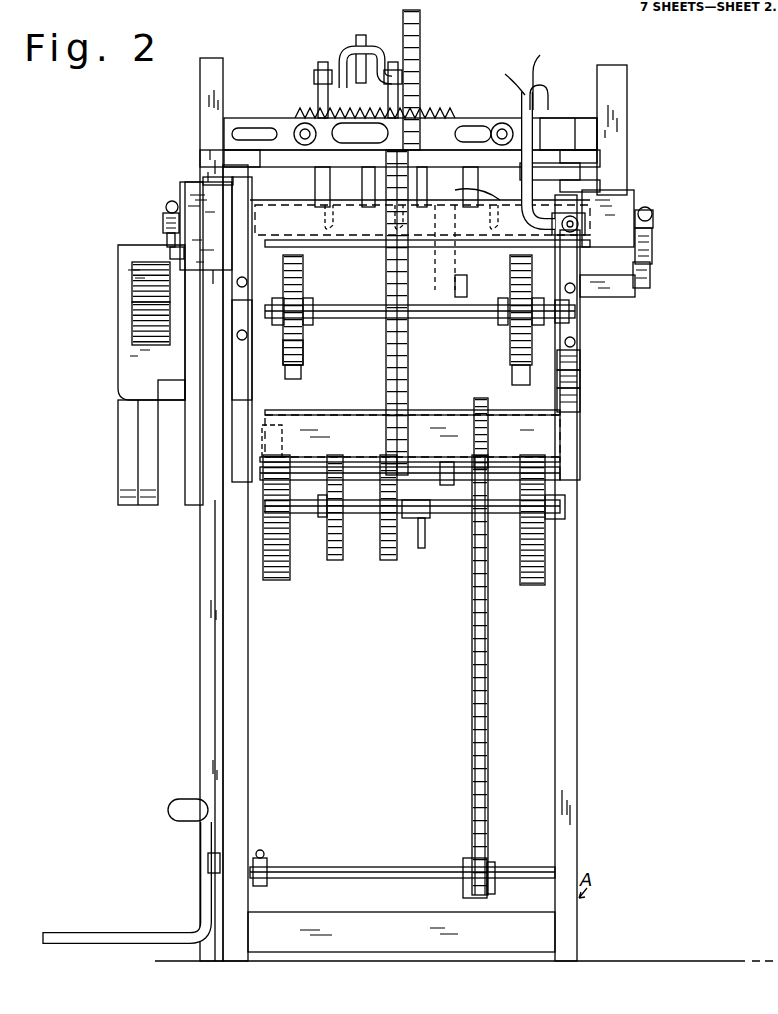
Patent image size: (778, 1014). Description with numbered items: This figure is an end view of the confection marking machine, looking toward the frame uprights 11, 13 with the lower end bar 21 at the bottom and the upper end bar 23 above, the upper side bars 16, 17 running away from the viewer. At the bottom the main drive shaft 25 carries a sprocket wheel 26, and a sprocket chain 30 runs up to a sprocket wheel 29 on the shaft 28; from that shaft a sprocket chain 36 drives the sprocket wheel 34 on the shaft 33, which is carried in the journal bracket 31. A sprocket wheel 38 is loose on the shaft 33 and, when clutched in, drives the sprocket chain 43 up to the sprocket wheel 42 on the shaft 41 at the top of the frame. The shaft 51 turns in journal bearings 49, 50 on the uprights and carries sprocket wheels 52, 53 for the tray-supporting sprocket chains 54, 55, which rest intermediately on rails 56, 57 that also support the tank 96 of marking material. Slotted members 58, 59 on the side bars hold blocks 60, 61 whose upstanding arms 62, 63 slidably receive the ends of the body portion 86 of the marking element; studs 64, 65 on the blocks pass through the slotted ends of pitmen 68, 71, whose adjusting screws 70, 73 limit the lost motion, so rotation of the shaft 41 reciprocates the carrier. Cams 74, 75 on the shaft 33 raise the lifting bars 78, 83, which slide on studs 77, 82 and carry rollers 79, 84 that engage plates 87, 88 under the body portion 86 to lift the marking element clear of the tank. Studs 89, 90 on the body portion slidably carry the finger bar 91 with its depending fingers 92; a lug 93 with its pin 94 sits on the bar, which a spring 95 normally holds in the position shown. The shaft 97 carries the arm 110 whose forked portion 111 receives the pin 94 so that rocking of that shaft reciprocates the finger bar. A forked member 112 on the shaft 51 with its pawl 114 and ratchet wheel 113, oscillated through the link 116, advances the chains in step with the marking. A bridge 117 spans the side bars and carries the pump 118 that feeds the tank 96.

The upright 11 is at (248, 706).
The upright 13 is at (577, 707).
The upper side bar 16 is at (232, 242).
The upper side bar 17 is at (652, 212).
The lower end bar 21 is at (372, 955).
The upper end bar 23 is at (552, 437).
The shaft 25 is at (365, 868).
The sprocket wheel 26 is at (468, 856).
The shaft 28 is at (442, 466).
The sprocket wheel 29 is at (488, 405).
The sprocket chain 30 is at (472, 684).
The journal bracket 31 is at (418, 530).
The shaft 33 is at (565, 508).
The sprocket wheel 34 is at (327, 550).
The sprocket chain 36 is at (327, 535).
The sprocket wheel 38 is at (385, 562).
The shaft 41 is at (595, 186).
The sprocket wheel 42 is at (395, 244).
The sprocket chain 43 is at (386, 372).
The journal bearing 49 is at (238, 338).
The journal bearing 50 is at (582, 356).
The shaft 51 is at (456, 318).
The sprocket wheel 52 is at (296, 368).
The sprocket wheel 53 is at (580, 379).
The sprocket chain 54 is at (303, 350).
The sprocket chain 55 is at (510, 345).
The rail 56 is at (262, 262).
The rail 57 is at (575, 303).
The slotted member 58 is at (206, 226).
The slotted member 59 is at (640, 280).
The block 60 is at (220, 182).
The block 61 is at (635, 200).
The arms 62 is at (198, 100).
The arms 63 is at (620, 133).
The stud 64 is at (163, 222).
The stud 65 is at (655, 236).
The pitman 68 is at (170, 253).
The adjusting screw 70 is at (166, 204).
The pitman 71 is at (650, 285).
The adjusting screw 73 is at (655, 218).
The cam 74 is at (288, 577).
The cam 75 is at (525, 588).
The stud 77 is at (290, 380).
The lifting bar 78 is at (262, 432).
The roller 79 is at (247, 167).
The stud 82 is at (528, 372).
The lifting bar 83 is at (580, 400).
The roller 84 is at (585, 170).
The body portion 86 is at (575, 130).
The plate 87 is at (258, 120).
The plate 88 is at (612, 150).
The stud 89 is at (303, 120).
The stud 90 is at (498, 122).
The finger bar 91 is at (432, 130).
The fingers 92 is at (362, 180).
The lug 93 is at (548, 100).
The pin 94 is at (533, 68).
The spring 95 is at (452, 110).
The tank 96 is at (332, 250).
The shaft 97 is at (585, 224).
The arm 110 is at (495, 200).
The forked portion 111 is at (522, 85).
The forked member 112 is at (138, 447).
The ratchet wheel 113 is at (140, 325).
The pawl 114 is at (135, 285).
The link 116 is at (118, 428).
The bridge 117 is at (442, 255).
The pump 118 is at (330, 80).